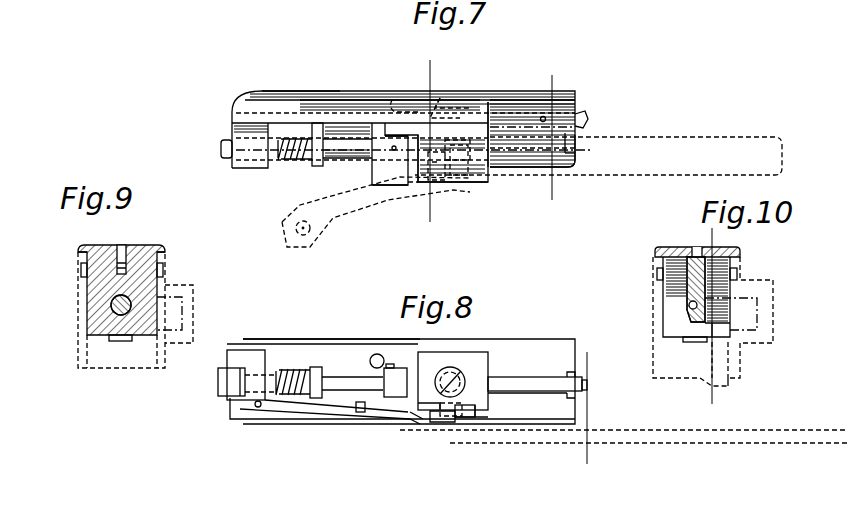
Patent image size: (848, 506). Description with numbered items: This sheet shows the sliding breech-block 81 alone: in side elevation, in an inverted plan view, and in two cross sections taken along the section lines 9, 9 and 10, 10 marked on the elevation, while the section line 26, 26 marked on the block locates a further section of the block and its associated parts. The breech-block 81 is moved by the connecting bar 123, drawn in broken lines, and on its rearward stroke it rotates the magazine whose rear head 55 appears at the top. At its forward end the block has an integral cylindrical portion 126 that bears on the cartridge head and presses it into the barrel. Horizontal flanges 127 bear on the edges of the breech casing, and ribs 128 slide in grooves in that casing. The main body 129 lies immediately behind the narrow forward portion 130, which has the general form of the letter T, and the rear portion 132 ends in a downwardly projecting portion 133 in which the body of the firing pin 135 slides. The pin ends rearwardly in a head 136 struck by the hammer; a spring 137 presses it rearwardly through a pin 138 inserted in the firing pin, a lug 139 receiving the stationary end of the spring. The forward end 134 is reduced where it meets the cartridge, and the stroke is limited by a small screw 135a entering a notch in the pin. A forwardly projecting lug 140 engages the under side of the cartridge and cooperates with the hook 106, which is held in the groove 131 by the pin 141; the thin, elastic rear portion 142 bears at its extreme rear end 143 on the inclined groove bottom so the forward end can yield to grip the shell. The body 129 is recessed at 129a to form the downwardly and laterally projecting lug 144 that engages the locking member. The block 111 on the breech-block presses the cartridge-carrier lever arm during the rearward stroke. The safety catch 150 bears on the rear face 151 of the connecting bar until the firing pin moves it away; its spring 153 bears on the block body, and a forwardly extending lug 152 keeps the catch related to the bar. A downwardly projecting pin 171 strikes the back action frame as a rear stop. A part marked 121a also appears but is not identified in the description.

In FIG. 7, the section line 9 is at (419, 220).
In FIG. 7, the section line 10 is at (541, 195).
In FIG. 8, the section line 26 is at (585, 410).
In FIG. 9, the section line 26 is at (191, 423).
In FIG. 10, the section line 26 is at (721, 401).
In FIG. 7, the rear head 55 is at (632, 9).
In FIG. 7, the breech-block 81 is at (455, 120).
In FIG. 7, the hook 106 is at (588, 120).
In FIG. 10, the hook 106 is at (690, 280).
In FIG. 7, the block 111 is at (403, 195).
In FIG. 8, the block 111 is at (397, 397).
In FIG. 9, the block 111 is at (125, 342).
In FIG. 10, the block 111 is at (680, 342).
In FIG. 7, the bolt 121a is at (473, 172).
In FIG. 7, the connecting bar 123 is at (663, 131).
In FIG. 8, the connecting bar 123 is at (590, 432).
In FIG. 10, the connecting bar 123 is at (768, 287).
In FIG. 7, the cylindrical portion 126 is at (576, 142).
In FIG. 8, the cylindrical portion 126 is at (571, 373).
In FIG. 10, the cylindrical portion 126 is at (686, 305).
In FIG. 7, the horizontal flanges 127 is at (316, 96).
In FIG. 9, the horizontal flanges 127 is at (163, 250).
In FIG. 7, the ribs 128 is at (280, 120).
In FIG. 9, the ribs 128 is at (162, 273).
In FIG. 7, the main body 129 is at (470, 185).
In FIG. 8, the main body 129 is at (466, 360).
In FIG. 9, the main body 129 is at (100, 290).
In FIG. 8, the recess 129a is at (477, 426).
In FIG. 7, the narrow forward portion 130 is at (513, 130).
In FIG. 10, the narrow forward portion 130 is at (688, 297).
In FIG. 10, the groove 131 is at (657, 251).
In FIG. 7, the rear portion 132 is at (340, 107).
In FIG. 8, the rear portion 132 is at (343, 350).
In FIG. 7, the downwardly projecting portion 133 is at (257, 165).
In FIG. 8, the downwardly projecting portion 133 is at (252, 356).
In FIG. 7, the forward end 134 is at (582, 156).
In FIG. 10, the forward end 134 is at (690, 308).
In FIG. 7, the firing pin 135 is at (335, 160).
In FIG. 8, the firing pin 135 is at (343, 388).
In FIG. 9, the firing pin 135 is at (108, 310).
In FIG. 7, the screw 135a is at (490, 100).
In FIG. 7, the head 136 is at (228, 150).
In FIG. 8, the head 136 is at (227, 398).
In FIG. 7, the spring 137 is at (290, 160).
In FIG. 8, the spring 137 is at (298, 369).
In FIG. 7, the pin 138 is at (270, 165).
In FIG. 7, the lug 139 is at (315, 163).
In FIG. 8, the lug 139 is at (318, 368).
In FIG. 7, the forwardly projecting lug 140 is at (577, 165).
In FIG. 8, the forwardly projecting lug 140 is at (587, 382).
In FIG. 7, the pin 141 is at (548, 120).
In FIG. 7, the rear portion 142 is at (440, 98).
In FIG. 7, the rear end 143 is at (392, 100).
In FIG. 8, the lug 144 is at (423, 420).
In FIG. 8, the safety catch 150 is at (442, 424).
In FIG. 8, the rear face 151 is at (460, 430).
In FIG. 8, the forwardly extending lug 152 is at (462, 410).
In FIG. 8, the spring 153 is at (413, 408).
In FIG. 7, the pin 171 is at (380, 185).
In FIG. 8, the pin 171 is at (380, 354).